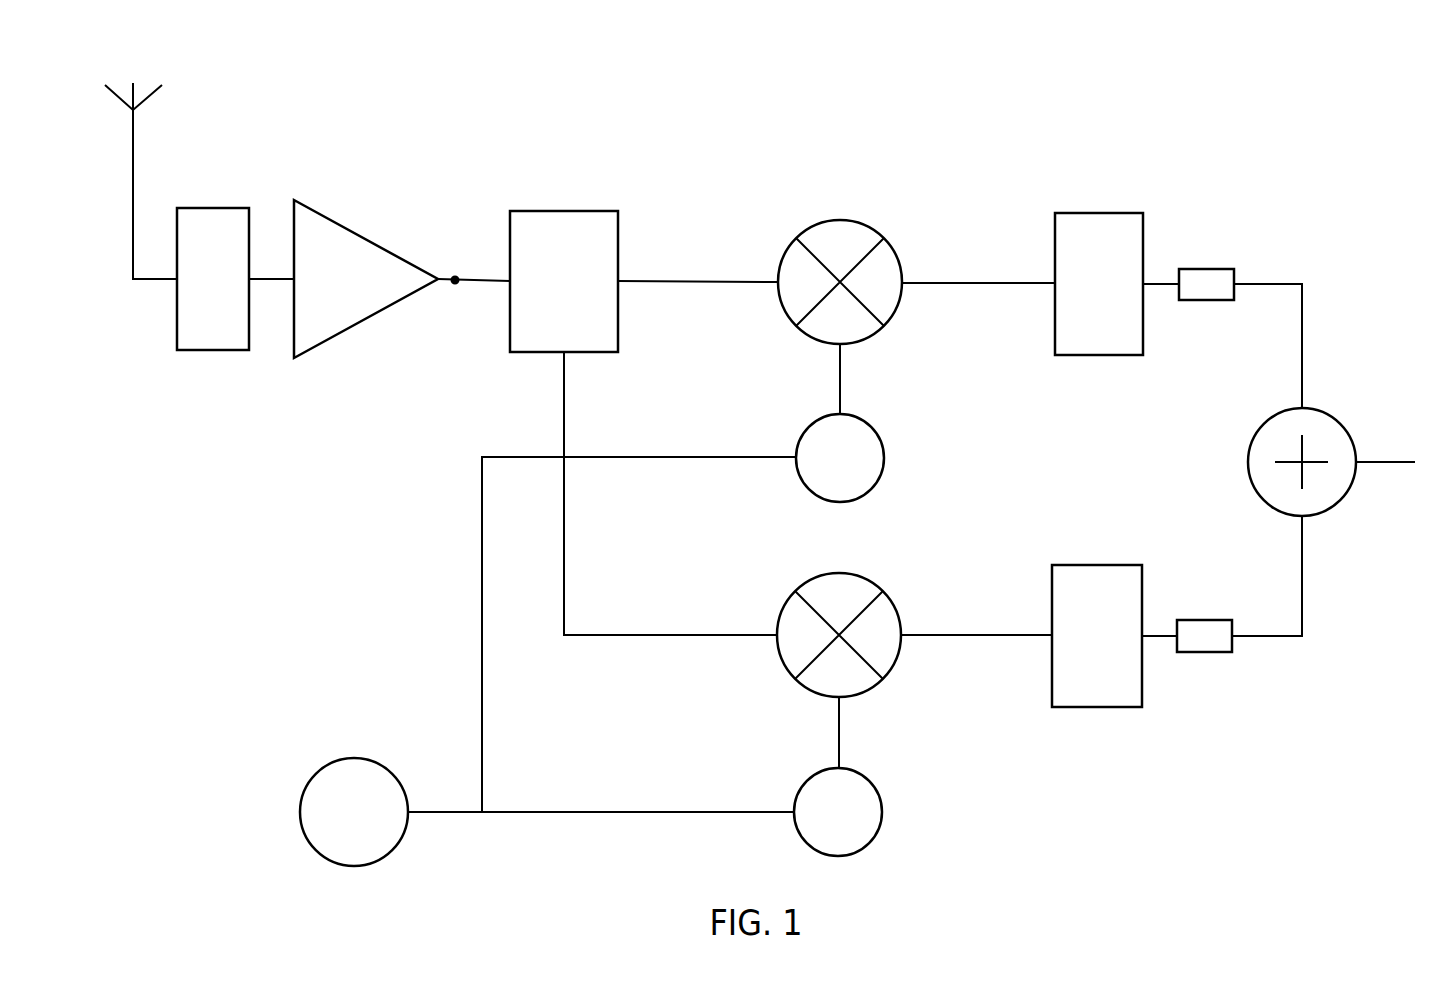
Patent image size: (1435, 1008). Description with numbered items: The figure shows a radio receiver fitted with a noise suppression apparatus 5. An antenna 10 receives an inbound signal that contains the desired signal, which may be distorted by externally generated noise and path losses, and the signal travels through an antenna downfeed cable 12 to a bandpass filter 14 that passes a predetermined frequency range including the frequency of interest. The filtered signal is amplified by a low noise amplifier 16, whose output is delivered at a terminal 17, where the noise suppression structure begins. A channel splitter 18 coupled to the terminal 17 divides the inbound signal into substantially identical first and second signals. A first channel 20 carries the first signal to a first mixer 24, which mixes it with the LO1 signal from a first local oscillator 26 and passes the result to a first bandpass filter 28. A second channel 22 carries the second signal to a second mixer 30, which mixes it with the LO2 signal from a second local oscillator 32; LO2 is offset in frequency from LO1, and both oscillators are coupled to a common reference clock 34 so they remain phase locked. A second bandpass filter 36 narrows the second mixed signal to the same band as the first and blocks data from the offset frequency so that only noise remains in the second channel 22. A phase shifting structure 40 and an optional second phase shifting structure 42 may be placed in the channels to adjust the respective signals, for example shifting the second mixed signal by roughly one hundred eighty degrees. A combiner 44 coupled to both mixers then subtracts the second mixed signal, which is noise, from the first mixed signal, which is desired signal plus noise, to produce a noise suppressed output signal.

The noise suppression apparatus 5 is at (892, 127).
The antenna 10 is at (134, 90).
The antenna downfeed cable 12 is at (135, 143).
The bandpass filter 14 is at (241, 208).
The low noise amplifier 16 is at (331, 219).
The terminal 17 is at (457, 278).
The channel splitter 18 is at (595, 211).
The first channel 20 is at (651, 281).
The second channel 22 is at (564, 390).
The first mixer 24 is at (887, 242).
The first local oscillator 26 is at (876, 430).
The first bandpass filter 28 is at (1123, 213).
The second mixer 30 is at (888, 598).
The second local oscillator 32 is at (868, 780).
The common reference clock 34 is at (340, 758).
The second bandpass filter 36 is at (1120, 565).
The phase shifting structure 40 is at (1216, 620).
The second phase shifting structure 42 is at (1222, 269).
The combiner 44 is at (1334, 420).